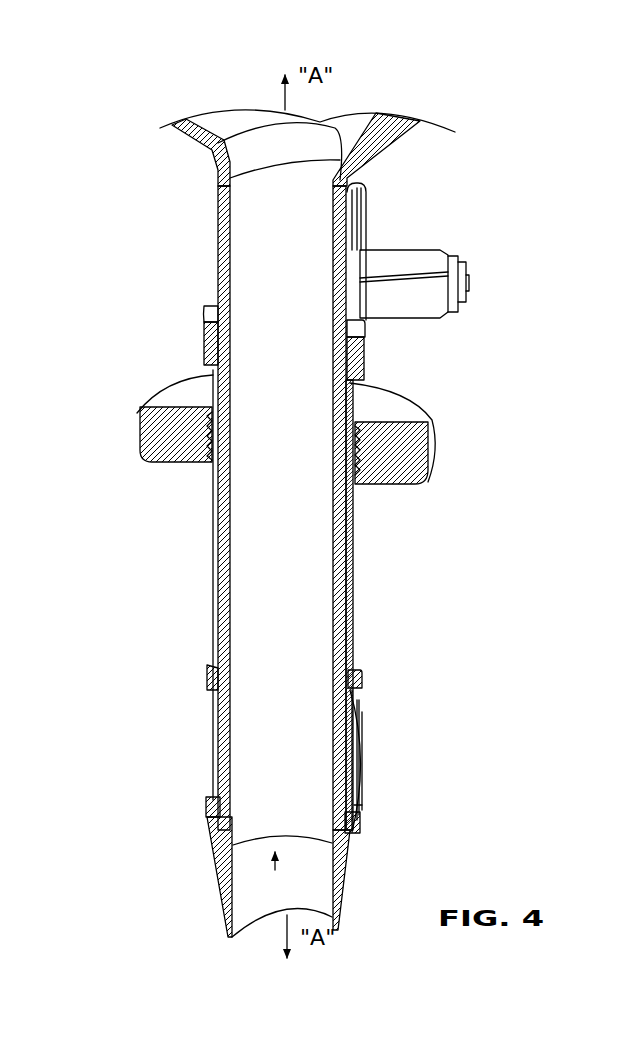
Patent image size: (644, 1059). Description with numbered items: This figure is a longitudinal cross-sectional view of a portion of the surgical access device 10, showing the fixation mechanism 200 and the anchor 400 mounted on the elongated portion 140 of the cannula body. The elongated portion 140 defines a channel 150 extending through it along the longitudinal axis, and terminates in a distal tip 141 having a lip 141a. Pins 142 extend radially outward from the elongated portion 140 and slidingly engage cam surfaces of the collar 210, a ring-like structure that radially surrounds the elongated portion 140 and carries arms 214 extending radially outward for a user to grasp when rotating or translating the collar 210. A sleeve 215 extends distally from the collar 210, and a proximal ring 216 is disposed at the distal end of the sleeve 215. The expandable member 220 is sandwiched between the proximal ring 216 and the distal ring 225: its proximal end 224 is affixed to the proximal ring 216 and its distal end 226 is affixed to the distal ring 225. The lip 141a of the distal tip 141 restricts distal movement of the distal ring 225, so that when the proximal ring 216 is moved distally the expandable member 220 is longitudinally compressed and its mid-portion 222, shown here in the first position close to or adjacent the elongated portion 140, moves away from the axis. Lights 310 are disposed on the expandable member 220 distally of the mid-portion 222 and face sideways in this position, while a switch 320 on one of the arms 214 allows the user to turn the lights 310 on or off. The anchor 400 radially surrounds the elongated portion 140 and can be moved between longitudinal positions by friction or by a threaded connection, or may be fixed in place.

The surgical access device 10 is at (154, 97).
The elongated portion 140 is at (220, 183).
The distal tip 141 is at (231, 938).
The lip 141a is at (213, 833).
The pin 142 is at (348, 318).
The channel 150 is at (273, 877).
The fixation mechanism 200 is at (150, 578).
The collar 210 is at (367, 213).
The arm 214 is at (422, 255).
The sleeve 215 is at (347, 548).
The proximal ring 216 is at (358, 680).
The expandable member 220 is at (367, 737).
The mid-portion 222 is at (355, 755).
The proximal end 224 is at (357, 700).
The distal ring 225 is at (358, 823).
The distal end 226 is at (358, 807).
The lights 310 is at (357, 787).
The switch 320 is at (468, 278).
The anchor 400 is at (435, 427).